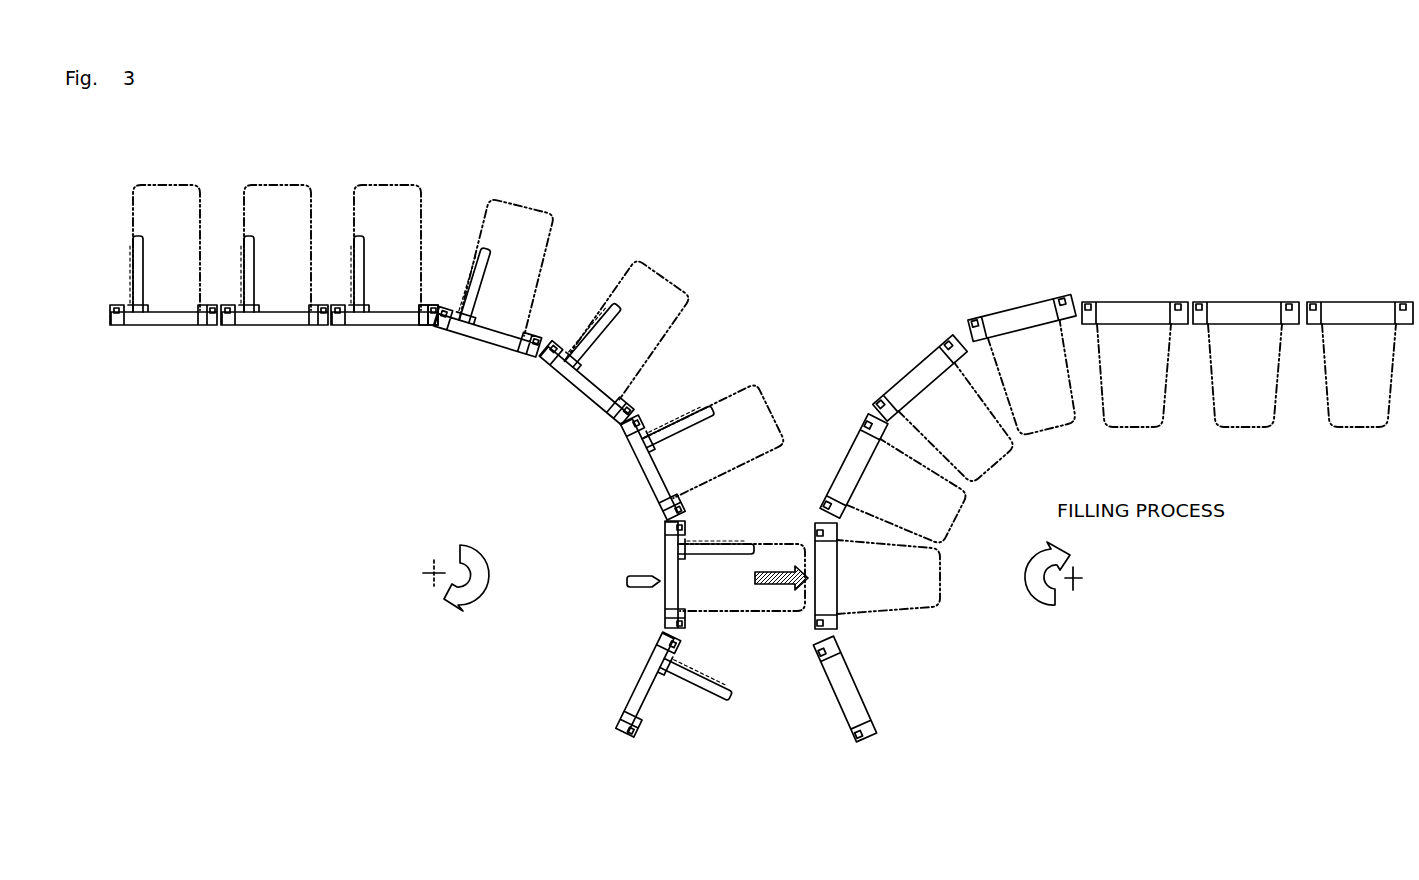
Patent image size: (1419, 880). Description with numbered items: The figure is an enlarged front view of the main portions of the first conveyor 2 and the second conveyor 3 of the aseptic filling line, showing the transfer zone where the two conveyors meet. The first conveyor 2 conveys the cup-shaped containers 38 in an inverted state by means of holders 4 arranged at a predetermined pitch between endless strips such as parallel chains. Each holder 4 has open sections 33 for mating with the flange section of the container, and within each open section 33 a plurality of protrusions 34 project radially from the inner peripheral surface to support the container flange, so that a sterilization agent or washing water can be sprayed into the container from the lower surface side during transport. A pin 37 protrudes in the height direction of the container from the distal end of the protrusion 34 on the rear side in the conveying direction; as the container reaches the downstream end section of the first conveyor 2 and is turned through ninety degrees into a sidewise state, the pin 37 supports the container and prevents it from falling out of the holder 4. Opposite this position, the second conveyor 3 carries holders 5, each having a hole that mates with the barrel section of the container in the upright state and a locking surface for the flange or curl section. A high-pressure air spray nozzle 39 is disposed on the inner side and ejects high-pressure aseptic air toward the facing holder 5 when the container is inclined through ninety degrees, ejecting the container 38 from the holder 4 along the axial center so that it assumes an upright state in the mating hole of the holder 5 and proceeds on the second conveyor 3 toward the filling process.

The first conveyor 2 is at (280, 330).
The open section 33 is at (384, 339).
The protrusion 34 is at (434, 376).
The cup-shaped container 38 is at (366, 186).
The pin 37 is at (592, 269).
The holder 4 is at (630, 430).
The high-pressure air spray nozzle 39 is at (633, 590).
The holder 5 is at (1084, 302).
The second conveyor 3 is at (1254, 299).